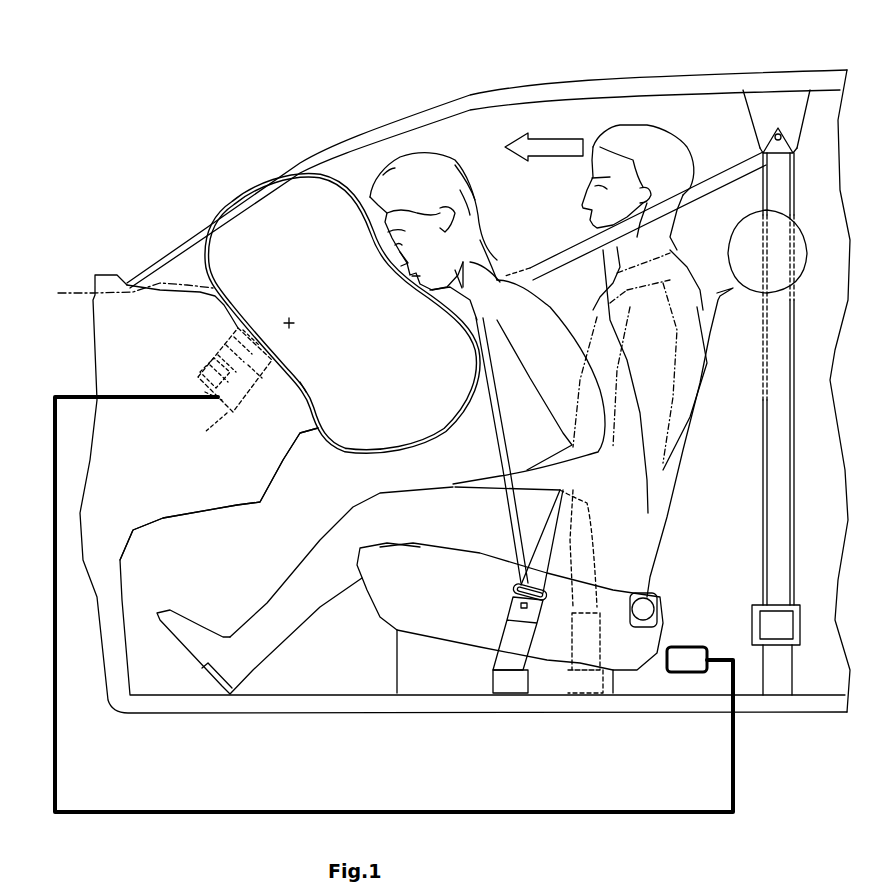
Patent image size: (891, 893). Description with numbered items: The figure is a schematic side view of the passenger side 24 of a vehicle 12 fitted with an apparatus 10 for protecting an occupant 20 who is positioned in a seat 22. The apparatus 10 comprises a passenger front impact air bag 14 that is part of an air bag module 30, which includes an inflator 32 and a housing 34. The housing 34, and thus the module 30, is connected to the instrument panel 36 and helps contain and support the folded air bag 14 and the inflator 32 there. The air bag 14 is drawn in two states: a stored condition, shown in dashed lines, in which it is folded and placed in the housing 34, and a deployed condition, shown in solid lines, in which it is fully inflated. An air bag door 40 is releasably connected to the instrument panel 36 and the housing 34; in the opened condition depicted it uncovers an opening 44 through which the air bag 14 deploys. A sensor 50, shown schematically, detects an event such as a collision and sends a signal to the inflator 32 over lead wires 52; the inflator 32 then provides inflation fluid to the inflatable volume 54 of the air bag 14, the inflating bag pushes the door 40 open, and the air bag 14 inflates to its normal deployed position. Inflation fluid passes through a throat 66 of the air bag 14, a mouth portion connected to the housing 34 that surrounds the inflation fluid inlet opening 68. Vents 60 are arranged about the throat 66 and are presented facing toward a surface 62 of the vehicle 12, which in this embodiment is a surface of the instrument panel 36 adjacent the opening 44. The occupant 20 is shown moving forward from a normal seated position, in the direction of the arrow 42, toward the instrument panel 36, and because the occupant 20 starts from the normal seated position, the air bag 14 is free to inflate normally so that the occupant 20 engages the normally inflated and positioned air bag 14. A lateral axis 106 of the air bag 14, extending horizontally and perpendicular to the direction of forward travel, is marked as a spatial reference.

The apparatus 10 is at (154, 220).
The vehicle 12 is at (160, 158).
The passenger front impact air bag 14 is at (307, 220).
The occupant 20 is at (555, 285).
The seat 22 is at (725, 384).
The passenger side 24 is at (472, 145).
The air bag module 30 is at (222, 335).
The inflator 32 is at (200, 378).
The housing 34 is at (227, 413).
The instrument panel 36 is at (278, 425).
The air bag door 40 is at (118, 293).
The arrow 42 is at (544, 136).
The opening 44 is at (260, 330).
The sensor 50 is at (687, 665).
The lead wires 52 is at (152, 810).
The inflatable volume 54 is at (267, 220).
The vents 60 is at (239, 305).
The surface 62 is at (310, 389).
The throat 66 is at (289, 373).
The inflation fluid inlet opening 68 is at (268, 355).
The lateral axis 106 is at (297, 320).